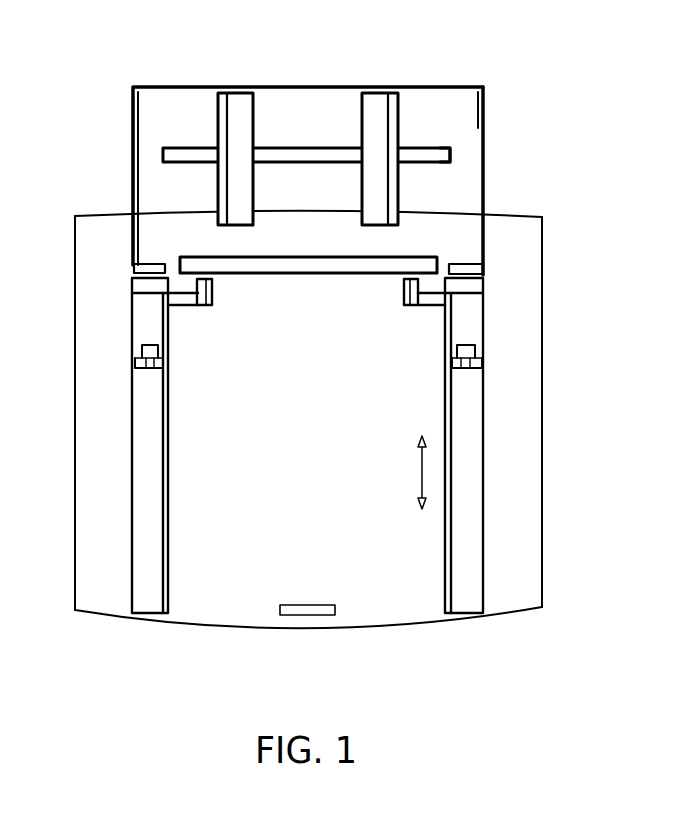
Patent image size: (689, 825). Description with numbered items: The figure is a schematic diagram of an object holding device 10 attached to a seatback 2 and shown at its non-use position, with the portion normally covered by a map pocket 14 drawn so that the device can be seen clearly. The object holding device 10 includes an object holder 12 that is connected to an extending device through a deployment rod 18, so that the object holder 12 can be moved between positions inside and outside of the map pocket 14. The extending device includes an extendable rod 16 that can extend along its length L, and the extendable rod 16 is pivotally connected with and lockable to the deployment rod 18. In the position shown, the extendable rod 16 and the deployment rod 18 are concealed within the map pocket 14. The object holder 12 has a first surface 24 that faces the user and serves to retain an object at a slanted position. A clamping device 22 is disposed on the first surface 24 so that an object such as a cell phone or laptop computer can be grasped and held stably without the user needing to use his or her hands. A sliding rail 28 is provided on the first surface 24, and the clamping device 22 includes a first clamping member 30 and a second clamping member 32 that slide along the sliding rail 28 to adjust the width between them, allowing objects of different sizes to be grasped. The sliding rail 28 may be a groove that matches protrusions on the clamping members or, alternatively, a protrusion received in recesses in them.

The seatback 2 is at (78, 166).
The object holding device 10 is at (524, 135).
The object holder 12 is at (158, 100).
The map pocket 14 is at (103, 510).
The extendable rod 16 is at (470, 419).
The deployment rod 18 is at (143, 318).
The clamping device 22 is at (302, 149).
The first surface 24 is at (453, 98).
The sliding rail 28 is at (450, 156).
The first clamping member 30 is at (235, 107).
The second clamping member 32 is at (377, 103).